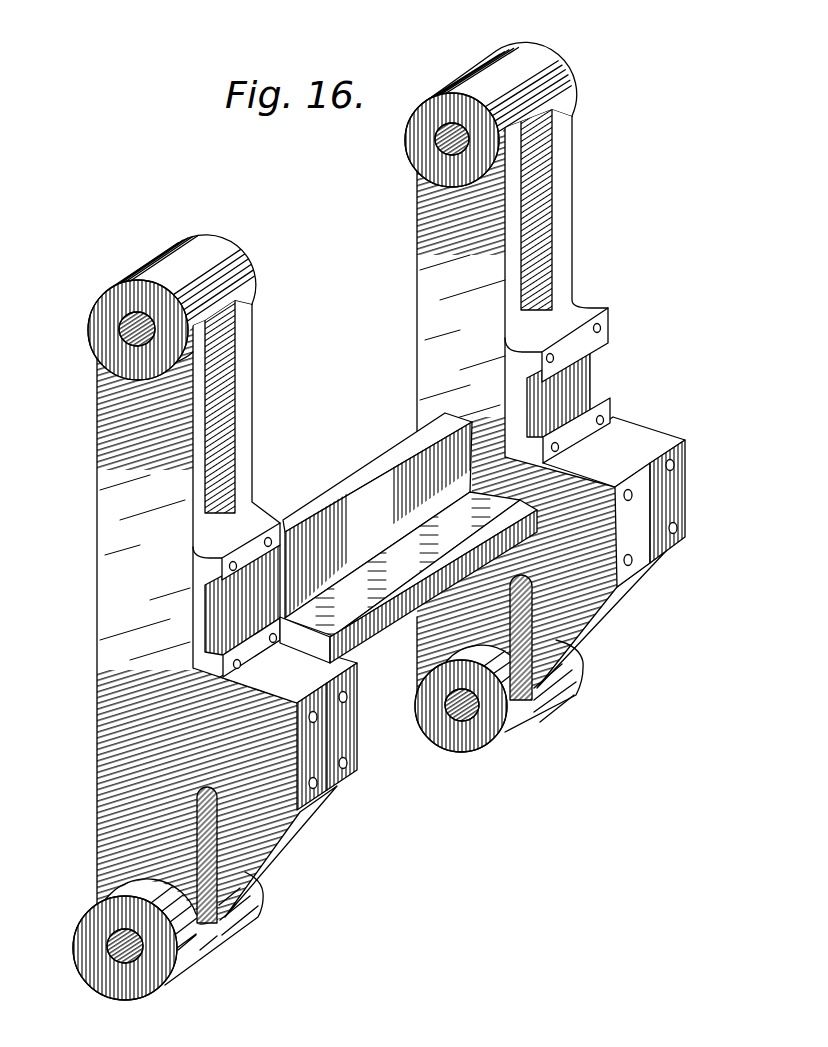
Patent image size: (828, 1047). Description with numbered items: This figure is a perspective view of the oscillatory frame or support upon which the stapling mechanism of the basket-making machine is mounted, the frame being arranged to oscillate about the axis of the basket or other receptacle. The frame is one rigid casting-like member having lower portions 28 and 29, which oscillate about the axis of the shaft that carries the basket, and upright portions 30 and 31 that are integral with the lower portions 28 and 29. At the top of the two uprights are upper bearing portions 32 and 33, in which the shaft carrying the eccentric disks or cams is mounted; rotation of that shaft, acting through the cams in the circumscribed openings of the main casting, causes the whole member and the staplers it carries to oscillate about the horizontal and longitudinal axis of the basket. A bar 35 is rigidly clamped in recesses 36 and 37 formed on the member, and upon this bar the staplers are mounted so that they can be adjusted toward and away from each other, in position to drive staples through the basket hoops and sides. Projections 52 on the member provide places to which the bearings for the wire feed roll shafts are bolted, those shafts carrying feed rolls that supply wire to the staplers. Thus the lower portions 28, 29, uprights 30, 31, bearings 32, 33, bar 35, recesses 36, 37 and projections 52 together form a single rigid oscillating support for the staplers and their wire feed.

The lower portion 28 is at (93, 963).
The lower portion 29 is at (533, 684).
The upright portion 30 is at (118, 541).
The upright portion 31 is at (440, 340).
The upper bearing portion 32 is at (118, 290).
The upper bearing portion 33 is at (506, 75).
The bar 35 is at (333, 517).
The recess 36 is at (222, 607).
The recess 37 is at (566, 387).
The projection 52 is at (328, 762).